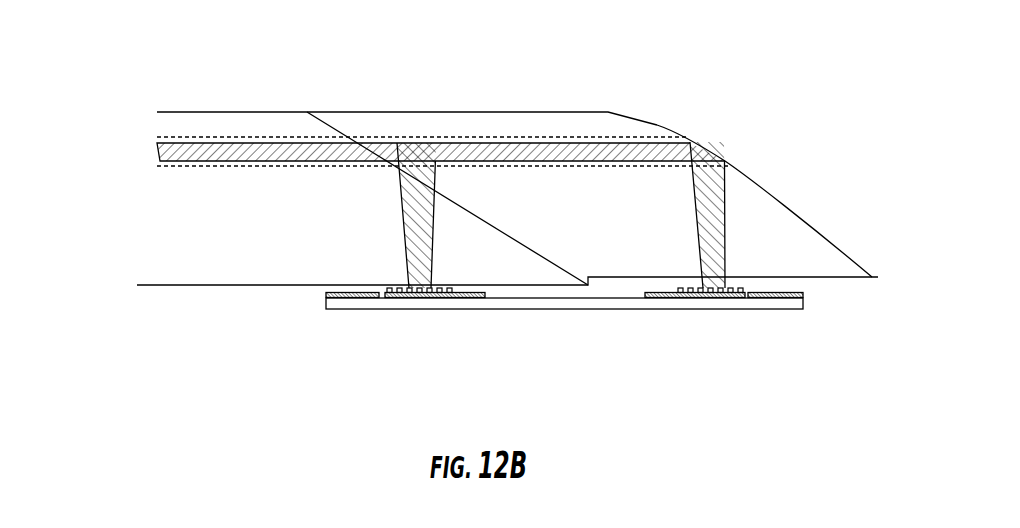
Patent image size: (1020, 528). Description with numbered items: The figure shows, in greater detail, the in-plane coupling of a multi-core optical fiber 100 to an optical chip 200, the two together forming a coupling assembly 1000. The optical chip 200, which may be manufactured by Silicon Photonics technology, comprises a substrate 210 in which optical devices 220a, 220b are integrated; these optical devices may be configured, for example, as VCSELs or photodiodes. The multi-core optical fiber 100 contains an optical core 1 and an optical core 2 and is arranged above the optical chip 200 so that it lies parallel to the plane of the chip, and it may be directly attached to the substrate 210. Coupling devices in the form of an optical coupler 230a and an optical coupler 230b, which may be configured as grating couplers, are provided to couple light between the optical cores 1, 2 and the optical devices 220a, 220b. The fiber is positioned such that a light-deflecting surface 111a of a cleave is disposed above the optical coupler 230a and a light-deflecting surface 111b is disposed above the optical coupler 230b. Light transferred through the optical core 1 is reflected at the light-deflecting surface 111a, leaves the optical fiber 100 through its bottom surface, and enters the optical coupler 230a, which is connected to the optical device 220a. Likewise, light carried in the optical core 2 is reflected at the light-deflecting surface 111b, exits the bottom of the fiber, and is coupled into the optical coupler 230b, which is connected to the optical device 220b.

The optical core 1 is at (279, 149).
The optical core 2 is at (561, 150).
The multi-core optical fiber 100 is at (378, 111).
The light-deflecting surface 111a is at (487, 193).
The light-deflecting surface 111b is at (762, 182).
The coupling assembly 1000 is at (709, 109).
The optical chip 200 is at (803, 304).
The substrate 210 is at (612, 300).
The optical device 220a is at (353, 303).
The optical device 220b is at (768, 300).
The optical coupler 230a is at (416, 298).
The optical coupler 230b is at (695, 298).